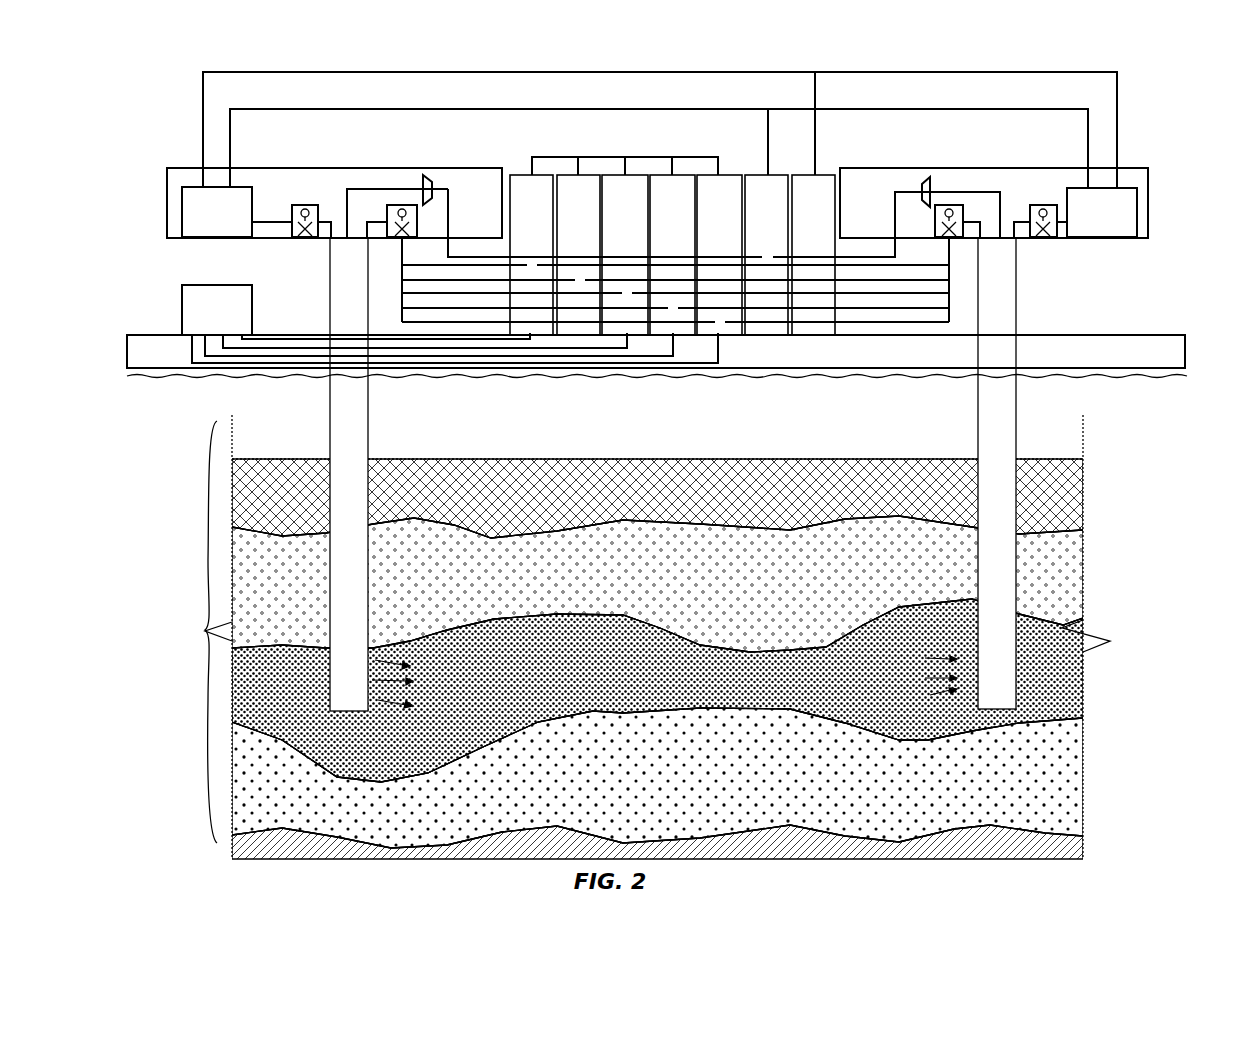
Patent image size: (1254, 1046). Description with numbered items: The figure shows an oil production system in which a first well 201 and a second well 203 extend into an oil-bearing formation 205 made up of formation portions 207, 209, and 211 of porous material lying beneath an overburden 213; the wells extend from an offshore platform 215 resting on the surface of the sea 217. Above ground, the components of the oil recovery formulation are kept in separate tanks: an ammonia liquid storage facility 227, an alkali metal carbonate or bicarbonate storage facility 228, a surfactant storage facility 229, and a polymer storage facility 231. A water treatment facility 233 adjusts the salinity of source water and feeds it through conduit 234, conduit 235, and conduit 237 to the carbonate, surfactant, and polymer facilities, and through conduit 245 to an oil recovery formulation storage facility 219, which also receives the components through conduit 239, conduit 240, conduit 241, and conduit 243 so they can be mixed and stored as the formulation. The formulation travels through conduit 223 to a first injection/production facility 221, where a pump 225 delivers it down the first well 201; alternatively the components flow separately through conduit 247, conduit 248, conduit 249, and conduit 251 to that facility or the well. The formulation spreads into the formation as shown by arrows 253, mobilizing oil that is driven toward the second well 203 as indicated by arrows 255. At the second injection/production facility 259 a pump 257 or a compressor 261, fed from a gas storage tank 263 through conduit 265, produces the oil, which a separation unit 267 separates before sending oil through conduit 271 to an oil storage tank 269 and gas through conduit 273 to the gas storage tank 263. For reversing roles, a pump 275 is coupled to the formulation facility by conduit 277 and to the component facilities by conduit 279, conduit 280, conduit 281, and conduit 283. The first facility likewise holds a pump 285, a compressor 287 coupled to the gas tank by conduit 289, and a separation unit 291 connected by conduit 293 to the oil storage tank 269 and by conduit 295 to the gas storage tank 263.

The first well 201 is at (332, 578).
The second well 203 is at (980, 578).
The oil-bearing formation 205 is at (624, 637).
The formation portion 207 is at (1063, 576).
The formation portion 209 is at (1065, 698).
The formation portion 211 is at (1063, 803).
The overburden 213 is at (1067, 499).
The offshore platform 215 is at (1187, 350).
The surface of the sea 217 is at (1143, 378).
The oil recovery formulation storage facility 219 is at (549, 210).
The first injection/production facility 221 is at (493, 168).
The conduit 223 is at (413, 252).
The pump 225 is at (392, 205).
The ammonia liquid storage facility 227 is at (596, 210).
The alkali metal carbonate or bicarbonate storage facility 228 is at (606, 210).
The surfactant storage facility 229 is at (691, 210).
The polymer storage facility 231 is at (701, 210).
The water treatment facility 233 is at (200, 323).
The conduit 234 is at (263, 350).
The conduit 235 is at (207, 358).
The conduit 237 is at (650, 366).
The conduit 239 is at (574, 168).
The conduit 240 is at (621, 168).
The conduit 241 is at (668, 168).
The conduit 243 is at (713, 168).
The conduit 245 is at (313, 342).
The conduit 247 is at (432, 282).
The conduit 248 is at (473, 297).
The conduit 249 is at (492, 312).
The conduit 251 is at (560, 325).
The arrows 253 is at (388, 700).
The arrows 255 is at (936, 698).
The pump 257 is at (1050, 204).
The second injection/production facility 259 is at (1148, 203).
The compressor 261 is at (927, 177).
The gas storage tank 263 is at (784, 210).
The conduit 265 is at (857, 255).
The separation unit 267 is at (1085, 225).
The oil storage tank 269 is at (831, 210).
The conduit 271 is at (963, 72).
The conduit 273 is at (868, 108).
The pump 275 is at (944, 205).
The conduit 277 is at (933, 252).
The conduit 279 is at (777, 282).
The conduit 280 is at (823, 298).
The conduit 281 is at (935, 322).
The conduit 283 is at (872, 323).
The pump 285 is at (307, 204).
The compressor 287 is at (427, 177).
The conduit 289 is at (462, 255).
The separation unit 291 is at (200, 225).
The conduit 293 is at (432, 72).
The conduit 295 is at (528, 108).